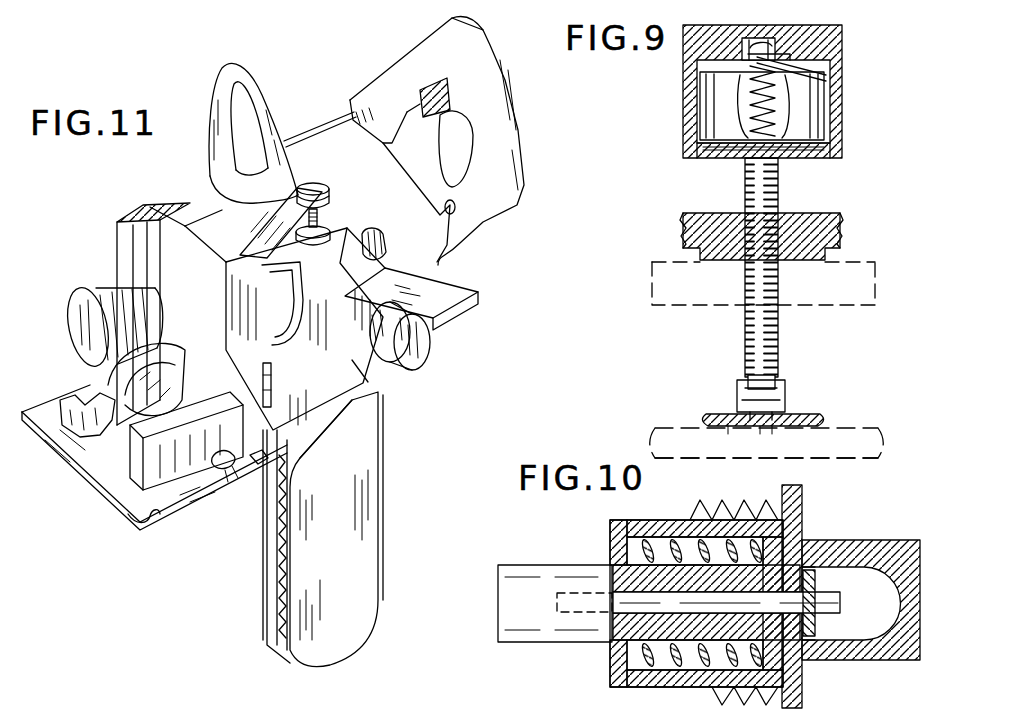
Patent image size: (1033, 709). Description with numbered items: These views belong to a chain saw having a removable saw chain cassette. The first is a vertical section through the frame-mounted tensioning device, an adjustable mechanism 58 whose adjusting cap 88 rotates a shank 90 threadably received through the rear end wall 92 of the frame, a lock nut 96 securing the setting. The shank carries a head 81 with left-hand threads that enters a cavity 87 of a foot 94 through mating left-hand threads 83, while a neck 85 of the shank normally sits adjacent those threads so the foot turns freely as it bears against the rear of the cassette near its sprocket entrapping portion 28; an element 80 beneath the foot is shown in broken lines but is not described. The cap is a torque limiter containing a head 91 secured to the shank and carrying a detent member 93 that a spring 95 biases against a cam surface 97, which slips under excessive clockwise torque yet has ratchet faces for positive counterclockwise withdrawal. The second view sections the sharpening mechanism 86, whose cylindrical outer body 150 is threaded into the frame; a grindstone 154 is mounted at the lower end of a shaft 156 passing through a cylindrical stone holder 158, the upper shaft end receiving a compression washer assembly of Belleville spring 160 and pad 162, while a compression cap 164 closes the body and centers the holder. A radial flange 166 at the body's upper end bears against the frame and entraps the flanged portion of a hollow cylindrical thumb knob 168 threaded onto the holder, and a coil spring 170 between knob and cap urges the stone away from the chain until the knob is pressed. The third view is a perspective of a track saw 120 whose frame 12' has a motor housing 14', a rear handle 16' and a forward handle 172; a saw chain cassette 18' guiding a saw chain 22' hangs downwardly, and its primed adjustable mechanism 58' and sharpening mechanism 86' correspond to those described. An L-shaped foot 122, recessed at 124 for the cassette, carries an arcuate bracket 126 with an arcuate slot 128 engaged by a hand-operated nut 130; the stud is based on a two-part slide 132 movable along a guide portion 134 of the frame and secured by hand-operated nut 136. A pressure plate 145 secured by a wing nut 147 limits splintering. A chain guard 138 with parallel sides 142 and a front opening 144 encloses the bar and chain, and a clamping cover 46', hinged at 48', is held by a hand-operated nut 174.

In FIG. 9, the adjusting cap 88 is at (845, 82).
In FIG. 9, the head 91 is at (830, 118).
In FIG. 9, the spring 95 is at (752, 112).
In FIG. 9, the detent member 93 is at (828, 60).
In FIG. 9, the cam surface 97 is at (828, 52).
In FIG. 9, the adjustable mechanism 58 is at (812, 158).
In FIG. 9, the shank 90 is at (745, 191).
In FIG. 9, the lock nut 96 is at (820, 213).
In FIG. 9, the rear end wall 92 is at (862, 260).
In FIG. 9, the neck 85 is at (748, 380).
In FIG. 9, the left-hand threads 83 is at (740, 396).
In FIG. 9, the foot 94 is at (825, 420).
In FIG. 9, the cavity 87 is at (740, 422).
In FIG. 9, the head 81 is at (770, 420).
In FIG. 9, the base 80 is at (668, 428).
In FIG. 9, the sprocket entrapping portion 28 is at (880, 418).
In FIG. 10, the grindstone 154 is at (558, 565).
In FIG. 10, the sharpening mechanism 86 is at (696, 573).
In FIG. 10, the cylindrical outer body 150 is at (668, 520).
In FIG. 10, the compression cap 164 is at (612, 662).
In FIG. 10, the cylindrical stone holder 158 is at (690, 540).
In FIG. 10, the coil spring 170 is at (696, 660).
In FIG. 10, the radial flange 166 is at (802, 520).
In FIG. 10, the hollow cylindrical thumb knob 168 is at (880, 660).
In FIG. 10, the shaft 156 is at (842, 604).
In FIG. 10, the Belleville spring 160 is at (816, 574).
In FIG. 10, the pad 162 is at (812, 652).
In FIG. 11, the forward handle 172 is at (213, 83).
In FIG. 11, the motor housing 14' is at (298, 161).
In FIG. 11, the track saw 120 is at (334, 68).
In FIG. 11, the rear handle 16' is at (453, 141).
In FIG. 11, the adjustment knob 58' is at (321, 186).
In FIG. 11, the locking knob 86' is at (394, 226).
In FIG. 11, the recess 124 is at (463, 320).
In FIG. 11, the hand-operated nut 174 is at (420, 347).
In FIG. 11, the arcuate slot 128 is at (181, 347).
In FIG. 11, the cover hinge 48' is at (300, 379).
In FIG. 11, the clamping cover 46' is at (392, 385).
In FIG. 11, the hand-operated nut 136 is at (114, 300).
In FIG. 11, the hand-operated nut 130 is at (87, 388).
In FIG. 11, the guide portion 134 is at (127, 218).
In FIG. 11, the two part slide 132 is at (117, 240).
In FIG. 11, the guide shoe or foot 122 is at (192, 500).
In FIG. 11, the arcuate bracket 126 is at (133, 517).
In FIG. 11, the pressure plate 145 is at (250, 470).
In FIG. 11, the wing nut 147 is at (213, 497).
In FIG. 11, the saw chain 22' is at (249, 487).
In FIG. 11, the front opening 144 is at (267, 568).
In FIG. 11, the parallel sides 142 is at (274, 627).
In FIG. 11, the chain guard 138 is at (367, 553).
In FIG. 11, the saw chain cassette 18' is at (361, 430).
In FIG. 11, the housing or frame 12' is at (190, 189).